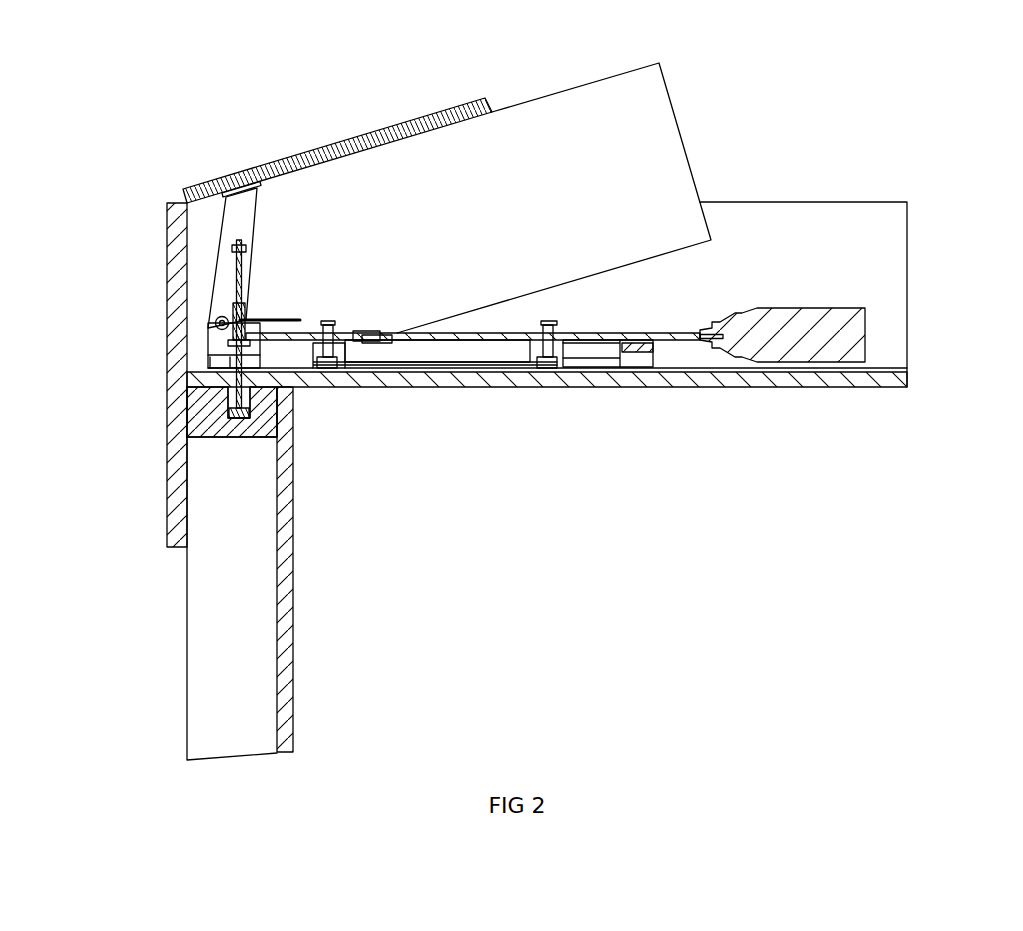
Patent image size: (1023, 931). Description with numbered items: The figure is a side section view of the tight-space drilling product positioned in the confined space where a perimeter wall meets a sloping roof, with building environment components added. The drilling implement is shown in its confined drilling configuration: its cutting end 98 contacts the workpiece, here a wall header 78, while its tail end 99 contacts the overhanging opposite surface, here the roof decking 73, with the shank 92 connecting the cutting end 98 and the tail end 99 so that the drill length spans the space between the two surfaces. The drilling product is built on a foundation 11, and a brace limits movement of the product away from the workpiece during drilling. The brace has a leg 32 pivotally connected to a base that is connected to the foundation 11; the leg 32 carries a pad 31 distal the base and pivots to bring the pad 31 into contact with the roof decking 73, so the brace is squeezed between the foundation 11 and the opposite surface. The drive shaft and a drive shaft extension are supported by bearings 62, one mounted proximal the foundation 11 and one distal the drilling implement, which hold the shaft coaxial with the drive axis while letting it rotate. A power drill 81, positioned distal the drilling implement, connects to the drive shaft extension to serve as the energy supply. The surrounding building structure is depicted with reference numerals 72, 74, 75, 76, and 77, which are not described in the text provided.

The foundation 11 is at (283, 318).
The pad 31 is at (260, 187).
The leg 32 is at (258, 227).
The bearing 62 is at (502, 333).
The housing 72 is at (820, 202).
The roof decking 73 is at (277, 162).
The side wall 74 is at (156, 578).
The lower wall 75 is at (187, 617).
The wall strip 76 is at (293, 647).
The base plate 77 is at (690, 387).
The wall header 78 is at (263, 437).
The power drill 81 is at (812, 308).
The shank 92 is at (243, 390).
The cutting end 98 is at (228, 437).
The tail end 99 is at (237, 242).